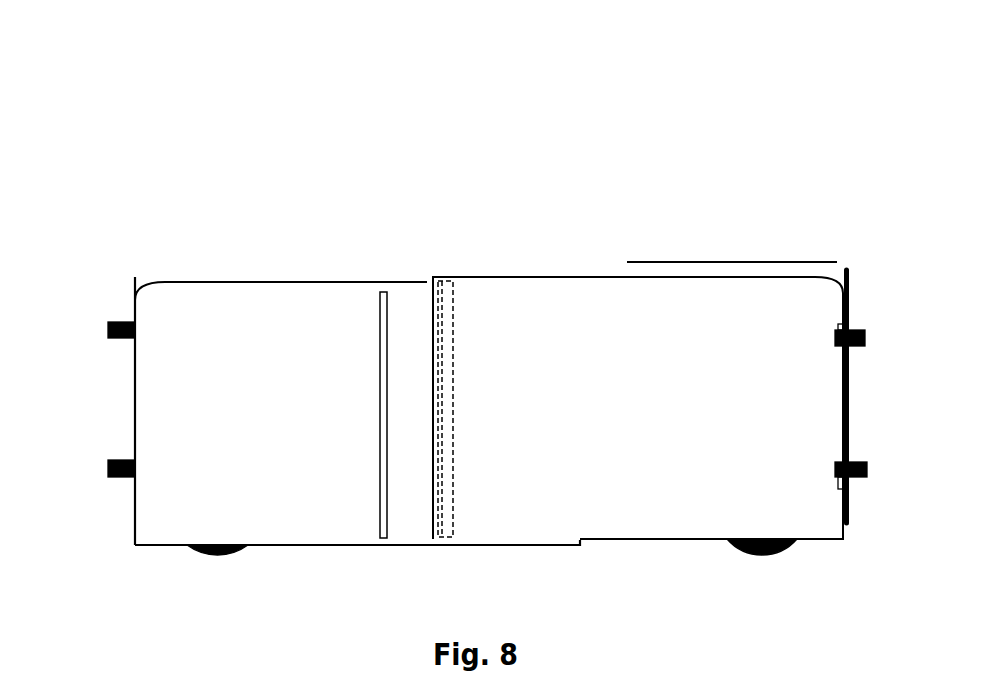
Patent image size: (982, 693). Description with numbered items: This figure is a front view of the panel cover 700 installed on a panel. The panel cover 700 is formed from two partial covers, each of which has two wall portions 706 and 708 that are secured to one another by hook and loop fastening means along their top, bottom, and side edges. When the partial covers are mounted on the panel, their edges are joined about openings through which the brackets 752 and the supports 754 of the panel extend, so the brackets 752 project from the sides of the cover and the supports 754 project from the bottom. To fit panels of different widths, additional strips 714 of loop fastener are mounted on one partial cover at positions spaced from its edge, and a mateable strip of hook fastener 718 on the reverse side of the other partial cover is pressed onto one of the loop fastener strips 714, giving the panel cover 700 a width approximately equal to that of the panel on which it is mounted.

The panel cover 700 is at (230, 193).
The wall portion 706 is at (275, 398).
The wall portion 708 is at (675, 405).
The strips of loop fastener 714 is at (380, 313).
The strip of hook fastener 718 is at (445, 323).
The brackets 752 is at (118, 322).
The supports 754 is at (203, 556).